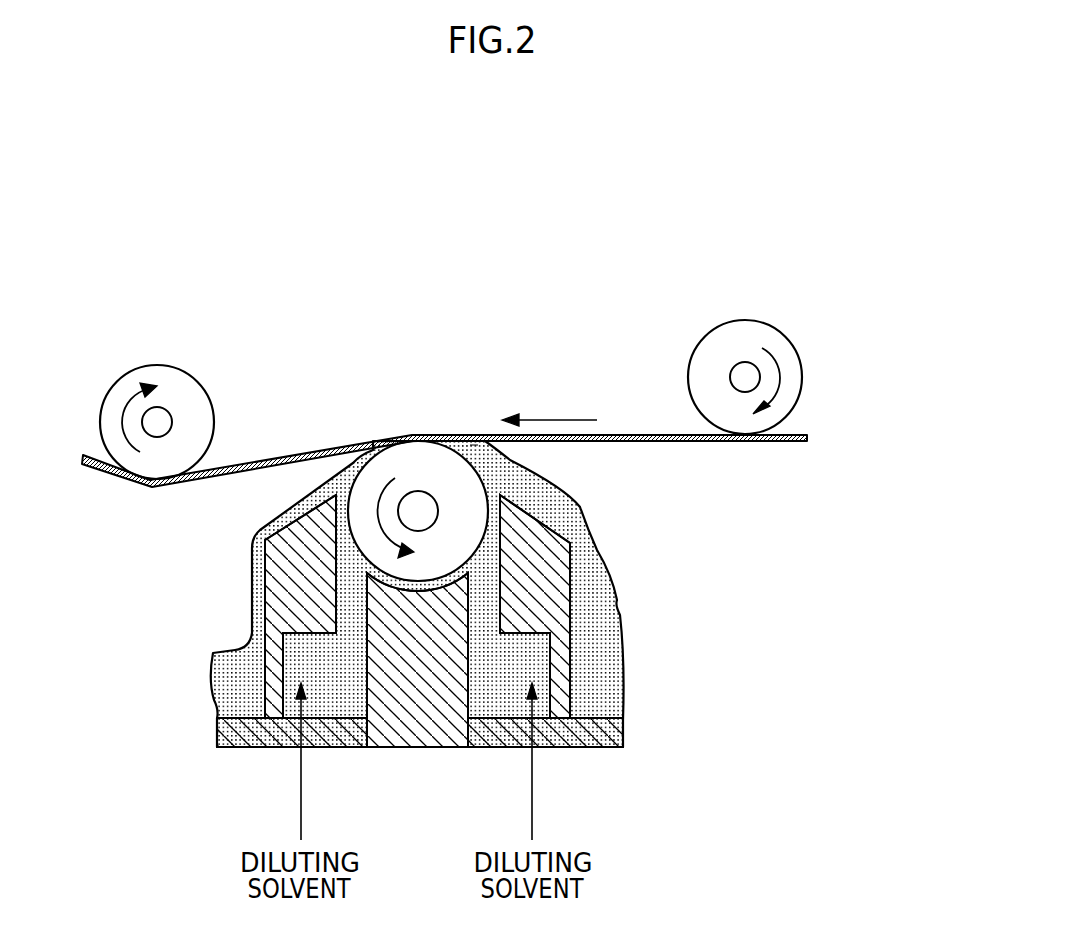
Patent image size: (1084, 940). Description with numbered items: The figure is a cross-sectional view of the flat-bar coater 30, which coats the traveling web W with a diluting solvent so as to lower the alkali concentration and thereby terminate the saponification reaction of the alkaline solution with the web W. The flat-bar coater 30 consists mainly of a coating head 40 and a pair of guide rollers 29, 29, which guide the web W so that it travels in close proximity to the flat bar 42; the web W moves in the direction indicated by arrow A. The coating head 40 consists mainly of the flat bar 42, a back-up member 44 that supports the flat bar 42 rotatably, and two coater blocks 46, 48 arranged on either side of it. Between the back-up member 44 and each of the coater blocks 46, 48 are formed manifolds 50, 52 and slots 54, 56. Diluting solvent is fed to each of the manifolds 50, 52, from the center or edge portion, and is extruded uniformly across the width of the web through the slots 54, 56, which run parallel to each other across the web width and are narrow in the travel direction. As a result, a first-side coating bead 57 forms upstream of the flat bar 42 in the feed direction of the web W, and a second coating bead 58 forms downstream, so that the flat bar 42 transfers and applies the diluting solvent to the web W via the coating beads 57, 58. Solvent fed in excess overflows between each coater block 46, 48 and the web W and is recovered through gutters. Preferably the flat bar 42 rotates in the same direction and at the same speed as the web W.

The guide roller 29 is at (178, 376).
The flat-bar coater 30 is at (920, 160).
The coating head 40 is at (623, 564).
The flat bar 42 is at (418, 457).
The back-up member 44 is at (422, 697).
The coater block 46 is at (550, 538).
The coater block 48 is at (313, 540).
The manifold 50 is at (497, 697).
The manifold 52 is at (337, 697).
The slot 54 is at (487, 590).
The slot 56 is at (353, 588).
The first-side coating bead 57 is at (473, 442).
The second coating bead 58 is at (380, 438).
The web W is at (730, 446).
The web conveying direction A is at (565, 420).